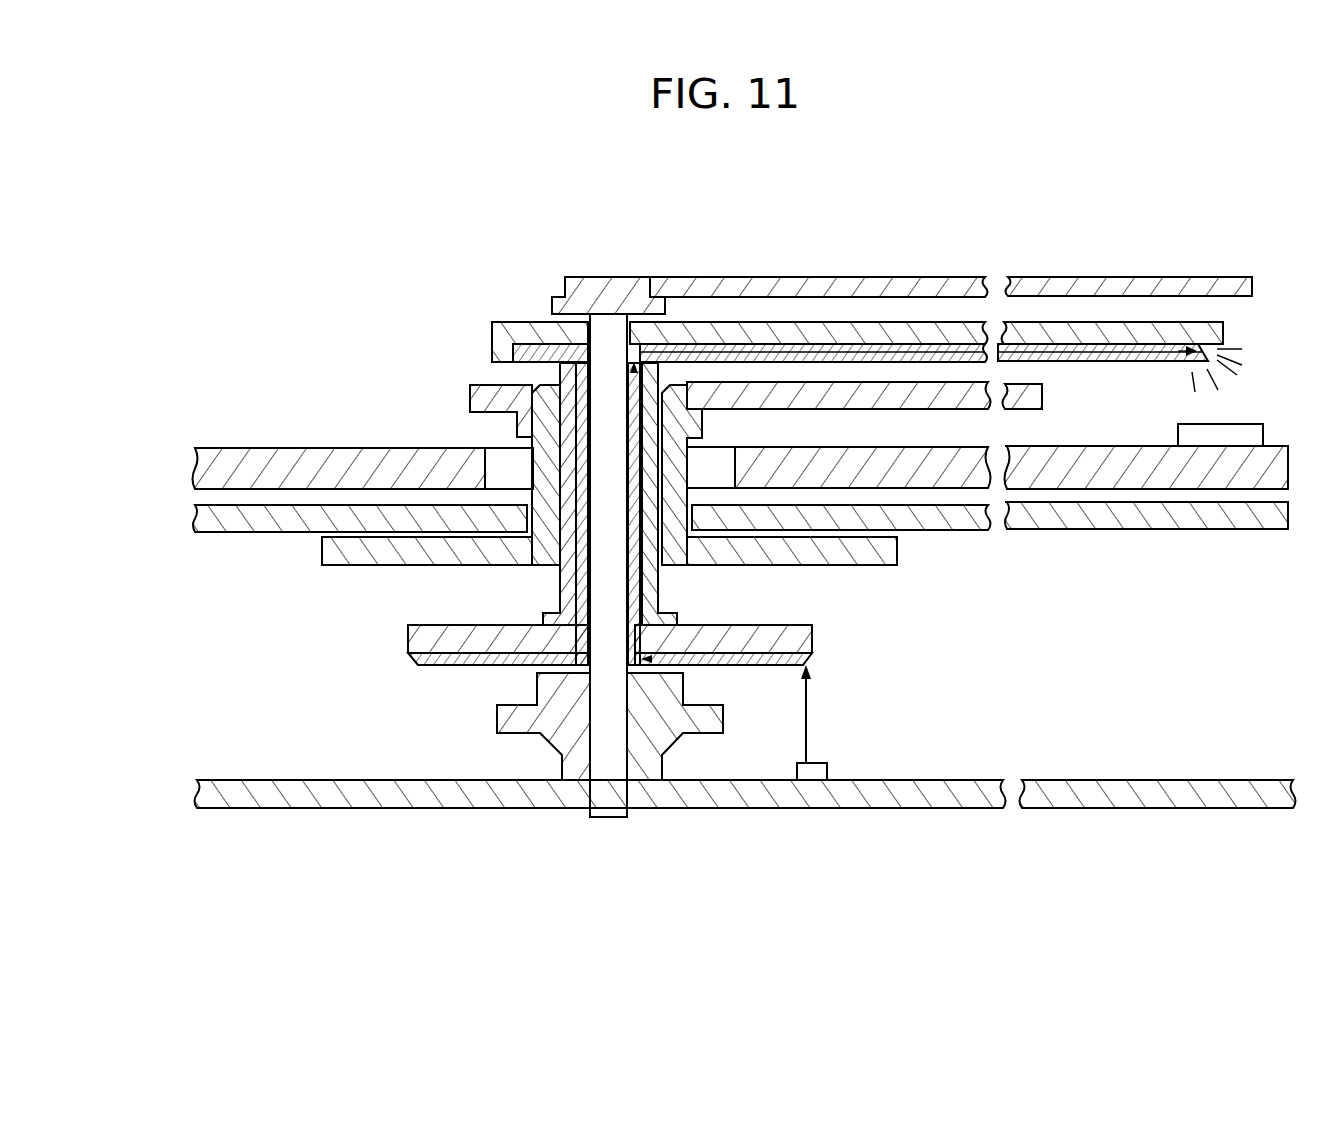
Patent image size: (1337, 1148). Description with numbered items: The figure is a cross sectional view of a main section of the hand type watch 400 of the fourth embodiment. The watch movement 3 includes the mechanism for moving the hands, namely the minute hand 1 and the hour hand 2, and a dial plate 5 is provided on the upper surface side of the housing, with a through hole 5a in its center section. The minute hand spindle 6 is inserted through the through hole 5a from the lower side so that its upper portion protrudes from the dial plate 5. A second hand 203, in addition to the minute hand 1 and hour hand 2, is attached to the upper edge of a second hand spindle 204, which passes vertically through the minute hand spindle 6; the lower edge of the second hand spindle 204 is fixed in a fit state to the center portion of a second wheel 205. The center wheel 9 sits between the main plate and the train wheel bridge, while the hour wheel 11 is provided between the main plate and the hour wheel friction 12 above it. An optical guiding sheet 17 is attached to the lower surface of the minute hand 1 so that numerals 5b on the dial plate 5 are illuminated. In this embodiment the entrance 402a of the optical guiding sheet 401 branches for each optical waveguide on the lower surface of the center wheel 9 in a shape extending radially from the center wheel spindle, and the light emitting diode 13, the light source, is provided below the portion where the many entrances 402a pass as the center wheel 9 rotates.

The minute hand 1 is at (1058, 325).
The hour hand 2 is at (1027, 395).
The watch movement 3 is at (370, 634).
The dial plate 5 is at (287, 448).
The through hole 5a is at (497, 450).
The numerals 5b is at (1252, 433).
The minute hand spindle 6 is at (573, 380).
The center wheel 9 is at (478, 653).
The hour wheel 11 is at (887, 553).
The hour wheel friction 12 is at (245, 510).
The light emitting diode 13 is at (827, 768).
The optical guiding sheet 17 is at (1127, 346).
The second hand 203 is at (745, 277).
The second hand spindle 204 is at (611, 322).
The second wheel 205 is at (497, 728).
The hand type watch 400 is at (681, 261).
The optical guiding sheet 401 is at (570, 378).
The entrance 402a is at (756, 663).